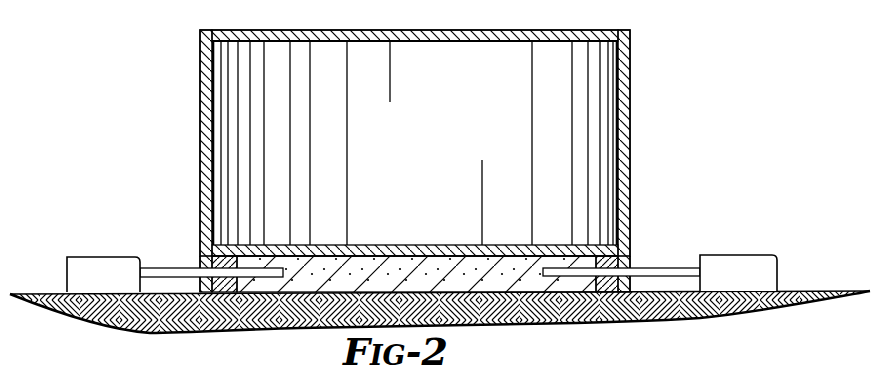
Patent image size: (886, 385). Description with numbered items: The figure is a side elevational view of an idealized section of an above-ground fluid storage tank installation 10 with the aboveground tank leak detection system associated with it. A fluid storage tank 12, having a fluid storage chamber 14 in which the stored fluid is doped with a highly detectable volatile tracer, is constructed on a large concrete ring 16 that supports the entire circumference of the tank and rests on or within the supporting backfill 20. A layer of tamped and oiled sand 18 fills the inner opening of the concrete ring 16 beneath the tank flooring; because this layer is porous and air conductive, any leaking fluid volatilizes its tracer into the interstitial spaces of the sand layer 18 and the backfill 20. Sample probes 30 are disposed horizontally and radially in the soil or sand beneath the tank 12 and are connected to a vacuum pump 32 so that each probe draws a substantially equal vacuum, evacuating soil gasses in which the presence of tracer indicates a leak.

The above-ground fluid storage tank installation 10 is at (172, 103).
The fluid storage tank 12 is at (630, 90).
The fluid storage chamber 14 is at (423, 141).
The concrete ring 16 is at (203, 262).
The tamped and oiled sand layer 18 is at (438, 267).
The supporting backfill 20 is at (40, 292).
The sample probes 30 is at (155, 268).
The vacuum pump 32 is at (98, 257).